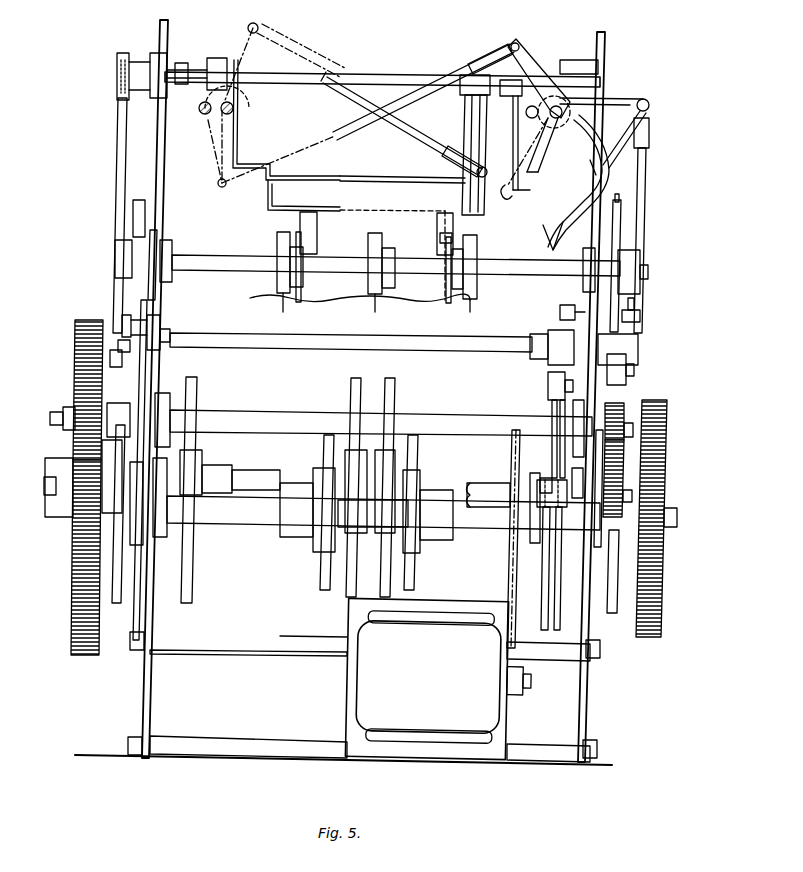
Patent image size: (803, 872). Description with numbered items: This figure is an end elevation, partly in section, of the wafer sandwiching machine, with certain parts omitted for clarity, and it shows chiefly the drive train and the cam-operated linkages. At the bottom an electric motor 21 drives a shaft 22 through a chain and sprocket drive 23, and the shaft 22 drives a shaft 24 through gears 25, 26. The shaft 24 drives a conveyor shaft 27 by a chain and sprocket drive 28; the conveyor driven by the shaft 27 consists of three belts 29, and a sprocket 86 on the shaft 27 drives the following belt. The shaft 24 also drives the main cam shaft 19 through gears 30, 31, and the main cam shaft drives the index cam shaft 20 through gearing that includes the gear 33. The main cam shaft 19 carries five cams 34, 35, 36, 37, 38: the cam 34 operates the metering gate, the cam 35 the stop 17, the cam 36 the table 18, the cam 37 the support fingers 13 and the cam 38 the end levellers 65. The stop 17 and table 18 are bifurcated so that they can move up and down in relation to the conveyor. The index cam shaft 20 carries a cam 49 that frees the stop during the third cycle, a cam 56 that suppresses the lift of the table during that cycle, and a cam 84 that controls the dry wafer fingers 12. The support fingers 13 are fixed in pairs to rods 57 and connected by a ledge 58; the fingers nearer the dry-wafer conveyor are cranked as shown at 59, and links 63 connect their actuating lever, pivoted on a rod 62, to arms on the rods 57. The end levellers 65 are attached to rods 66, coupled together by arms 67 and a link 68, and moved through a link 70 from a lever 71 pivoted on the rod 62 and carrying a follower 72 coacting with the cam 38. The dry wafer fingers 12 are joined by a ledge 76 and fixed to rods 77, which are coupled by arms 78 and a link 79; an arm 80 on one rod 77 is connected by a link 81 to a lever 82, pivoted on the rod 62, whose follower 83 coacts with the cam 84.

The dry wafer fingers 12 is at (520, 166).
The support fingers 13 is at (466, 123).
The stop 17 is at (300, 222).
The table 18 is at (300, 236).
The main cam shaft 19 is at (260, 476).
The index cam shaft 20 is at (252, 512).
The electric motor 21 is at (358, 678).
The shaft 22 is at (480, 482).
The chain and sprocket drive 23 is at (510, 576).
The shaft 24 is at (450, 418).
The gear 25 is at (632, 493).
The gear 26 is at (625, 406).
The conveyor shaft 27 is at (232, 254).
The chain and sprocket drive 28 is at (135, 366).
The belts 29 is at (372, 232).
The gear 30 is at (75, 432).
The gear 31 is at (72, 537).
The gear 33 is at (661, 574).
The cam 34 is at (197, 383).
The cam 35 is at (354, 378).
The cam 36 is at (390, 379).
The cam 37 is at (119, 603).
The cam 38 is at (612, 613).
The cam 49 is at (322, 576).
The cam 56 is at (412, 580).
The rod 57 is at (368, 76).
The ledge 58 is at (268, 202).
The cranked portion of support fingers 59 is at (240, 140).
The rod 62 is at (333, 336).
The links 63 is at (119, 150).
The end levellers 65 is at (546, 232).
The rods 66 is at (203, 114).
The arms 67 is at (212, 143).
The link 68 is at (330, 134).
The link 70 is at (644, 193).
The lever 71 is at (640, 322).
The follower 72 is at (635, 376).
The ledge 76 is at (506, 194).
The rod 77 is at (234, 110).
The arms 78 is at (250, 36).
The link 79 is at (408, 130).
The arm 80 is at (576, 180).
The link 81 is at (580, 196).
The lever 82 is at (560, 323).
The follower 83 is at (548, 384).
The cam 84 is at (551, 402).
The sprocket 86 is at (617, 200).